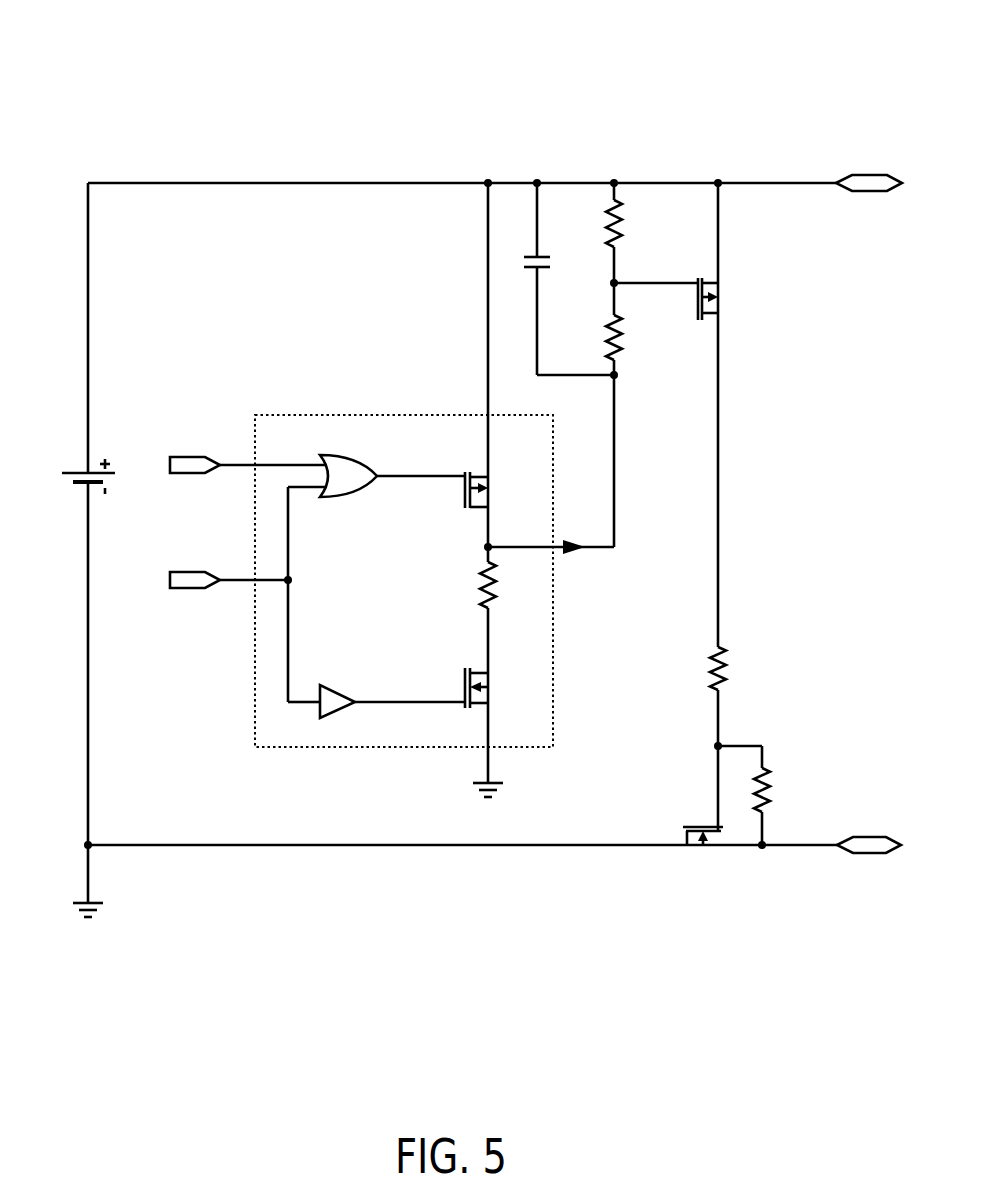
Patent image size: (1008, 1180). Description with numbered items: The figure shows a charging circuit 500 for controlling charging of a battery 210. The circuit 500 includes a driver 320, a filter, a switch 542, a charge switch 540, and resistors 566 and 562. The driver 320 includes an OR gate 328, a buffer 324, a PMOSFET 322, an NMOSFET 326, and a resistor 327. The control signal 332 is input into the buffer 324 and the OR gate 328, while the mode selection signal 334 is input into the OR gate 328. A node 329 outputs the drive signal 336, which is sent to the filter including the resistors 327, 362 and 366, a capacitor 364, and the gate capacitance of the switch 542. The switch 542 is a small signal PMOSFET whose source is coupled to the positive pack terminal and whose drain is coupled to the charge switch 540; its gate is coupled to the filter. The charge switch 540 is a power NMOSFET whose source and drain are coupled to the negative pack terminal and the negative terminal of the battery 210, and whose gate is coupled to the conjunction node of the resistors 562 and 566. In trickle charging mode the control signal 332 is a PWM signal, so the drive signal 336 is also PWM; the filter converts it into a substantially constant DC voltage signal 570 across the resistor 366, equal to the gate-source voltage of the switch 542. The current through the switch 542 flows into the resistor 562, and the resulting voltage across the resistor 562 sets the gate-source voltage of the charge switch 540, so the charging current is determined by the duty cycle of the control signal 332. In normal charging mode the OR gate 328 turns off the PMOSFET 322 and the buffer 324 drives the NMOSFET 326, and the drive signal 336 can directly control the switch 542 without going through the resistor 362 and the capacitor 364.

The charging circuit 500 is at (178, 98).
The battery 210 is at (80, 471).
The mode selection signal 334 is at (190, 474).
The control signal 332 is at (190, 571).
The driver 320 is at (339, 414).
The OR gate 328 is at (350, 457).
The buffer 324 is at (343, 698).
The PMOSFET 322 is at (492, 472).
The node 329 is at (489, 544).
The resistor 327 is at (478, 586).
The NMOSFET 326 is at (492, 672).
The capacitor 364 is at (543, 257).
The resistor 366 is at (622, 223).
The DC voltage signal 570 is at (620, 270).
The resistor 362 is at (605, 350).
The drive signal 336 is at (616, 510).
The switch 542 is at (736, 284).
The resistor 566 is at (727, 677).
The resistor 562 is at (770, 793).
The charge switch 540 is at (672, 818).